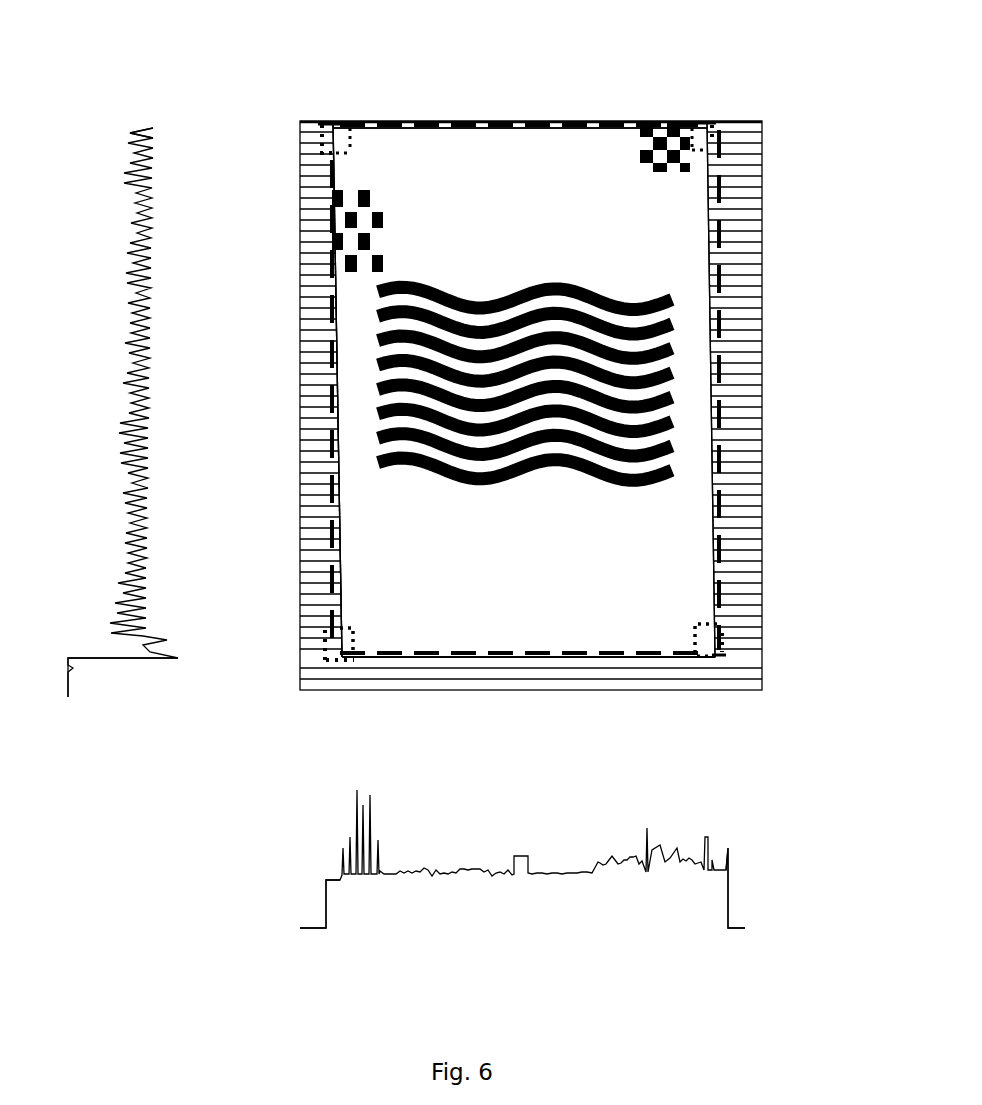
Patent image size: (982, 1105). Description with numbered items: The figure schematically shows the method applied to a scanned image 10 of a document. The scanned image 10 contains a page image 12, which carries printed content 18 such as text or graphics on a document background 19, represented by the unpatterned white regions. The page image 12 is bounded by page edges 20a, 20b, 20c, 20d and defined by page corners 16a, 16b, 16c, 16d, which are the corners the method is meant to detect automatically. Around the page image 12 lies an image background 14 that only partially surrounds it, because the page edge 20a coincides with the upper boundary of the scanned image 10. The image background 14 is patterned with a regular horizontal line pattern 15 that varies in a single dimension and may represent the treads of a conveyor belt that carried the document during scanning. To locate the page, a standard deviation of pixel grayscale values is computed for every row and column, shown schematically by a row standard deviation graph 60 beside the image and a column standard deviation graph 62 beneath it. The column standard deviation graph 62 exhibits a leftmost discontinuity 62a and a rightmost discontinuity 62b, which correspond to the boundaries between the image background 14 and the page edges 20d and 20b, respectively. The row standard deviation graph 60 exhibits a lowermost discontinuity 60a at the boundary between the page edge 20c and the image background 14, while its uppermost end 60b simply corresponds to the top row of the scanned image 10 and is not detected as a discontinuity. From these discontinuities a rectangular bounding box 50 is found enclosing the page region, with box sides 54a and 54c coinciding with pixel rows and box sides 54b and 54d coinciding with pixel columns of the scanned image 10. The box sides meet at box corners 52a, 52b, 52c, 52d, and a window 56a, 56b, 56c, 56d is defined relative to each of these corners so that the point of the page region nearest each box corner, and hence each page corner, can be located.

The scanned image 10 is at (410, 50).
The page image 12 is at (543, 150).
The image background 14 is at (293, 320).
The line pattern 15 is at (293, 428).
The page corner 16a is at (348, 130).
The page corner 16b is at (700, 124).
The page corner 16c is at (708, 656).
The page corner 16d is at (352, 654).
The printed content 18 is at (433, 312).
The document background 19 is at (676, 522).
The page edge 20a is at (437, 130).
The page edge 20b is at (705, 208).
The page edge 20c is at (548, 656).
The page edge 20d is at (350, 542).
The bounding box 50 is at (335, 505).
The box corner 52a is at (330, 122).
The box corner 52b is at (712, 124).
The box corner 52c is at (718, 657).
The box corner 52d is at (330, 656).
The box side 54a is at (392, 122).
The box side 54b is at (727, 326).
The box side 54c is at (546, 657).
The box side 54d is at (332, 272).
The window 56a is at (350, 160).
The window 56b is at (701, 150).
The window 56c is at (705, 626).
The window 56d is at (348, 642).
The row standard deviation graph 60 is at (90, 330).
The lowermost discontinuity 60a is at (101, 660).
The uppermost end 60b is at (155, 128).
The column standard deviation graph 62 is at (520, 895).
The leftmost discontinuity 62a is at (325, 890).
The rightmost discontinuity 62b is at (730, 882).